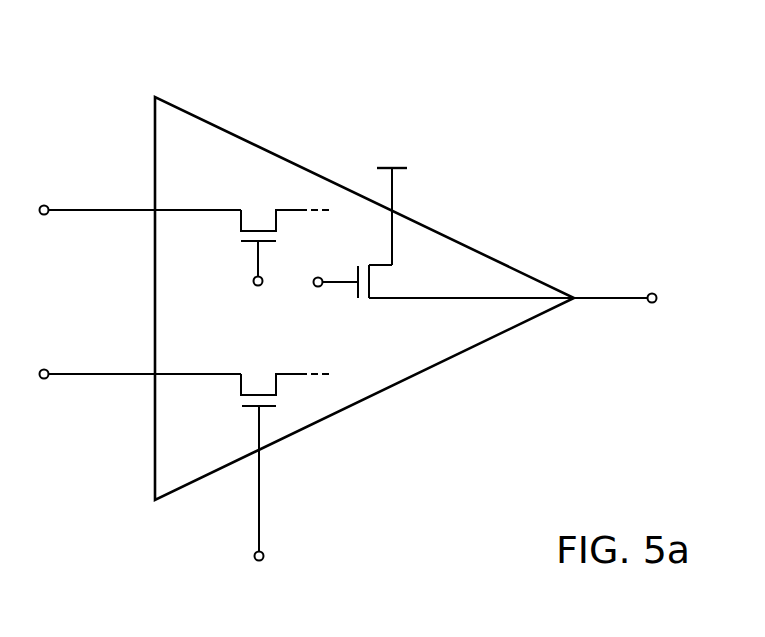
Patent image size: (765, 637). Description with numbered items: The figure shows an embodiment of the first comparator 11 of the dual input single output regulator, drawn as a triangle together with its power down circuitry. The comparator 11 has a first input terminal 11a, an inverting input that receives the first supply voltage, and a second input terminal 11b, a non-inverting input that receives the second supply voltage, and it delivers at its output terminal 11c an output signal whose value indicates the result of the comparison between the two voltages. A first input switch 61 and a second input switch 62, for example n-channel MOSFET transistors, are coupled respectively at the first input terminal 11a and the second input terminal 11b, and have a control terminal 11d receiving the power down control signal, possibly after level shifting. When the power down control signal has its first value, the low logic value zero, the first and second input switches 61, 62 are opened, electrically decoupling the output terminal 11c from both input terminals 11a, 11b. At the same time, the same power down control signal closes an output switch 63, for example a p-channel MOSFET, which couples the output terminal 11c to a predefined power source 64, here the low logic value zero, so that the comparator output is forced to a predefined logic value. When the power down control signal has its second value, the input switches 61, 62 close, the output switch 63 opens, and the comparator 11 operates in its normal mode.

The first comparator 11 is at (86, 84).
The first input terminal 11a is at (151, 206).
The second input terminal 11b is at (151, 369).
The output terminal 11c is at (583, 294).
The control terminal 11d is at (268, 453).
The first input switch 61 is at (243, 243).
The second input switch 62 is at (243, 405).
The output switch 63 is at (362, 300).
The predefined power source 64 is at (406, 164).